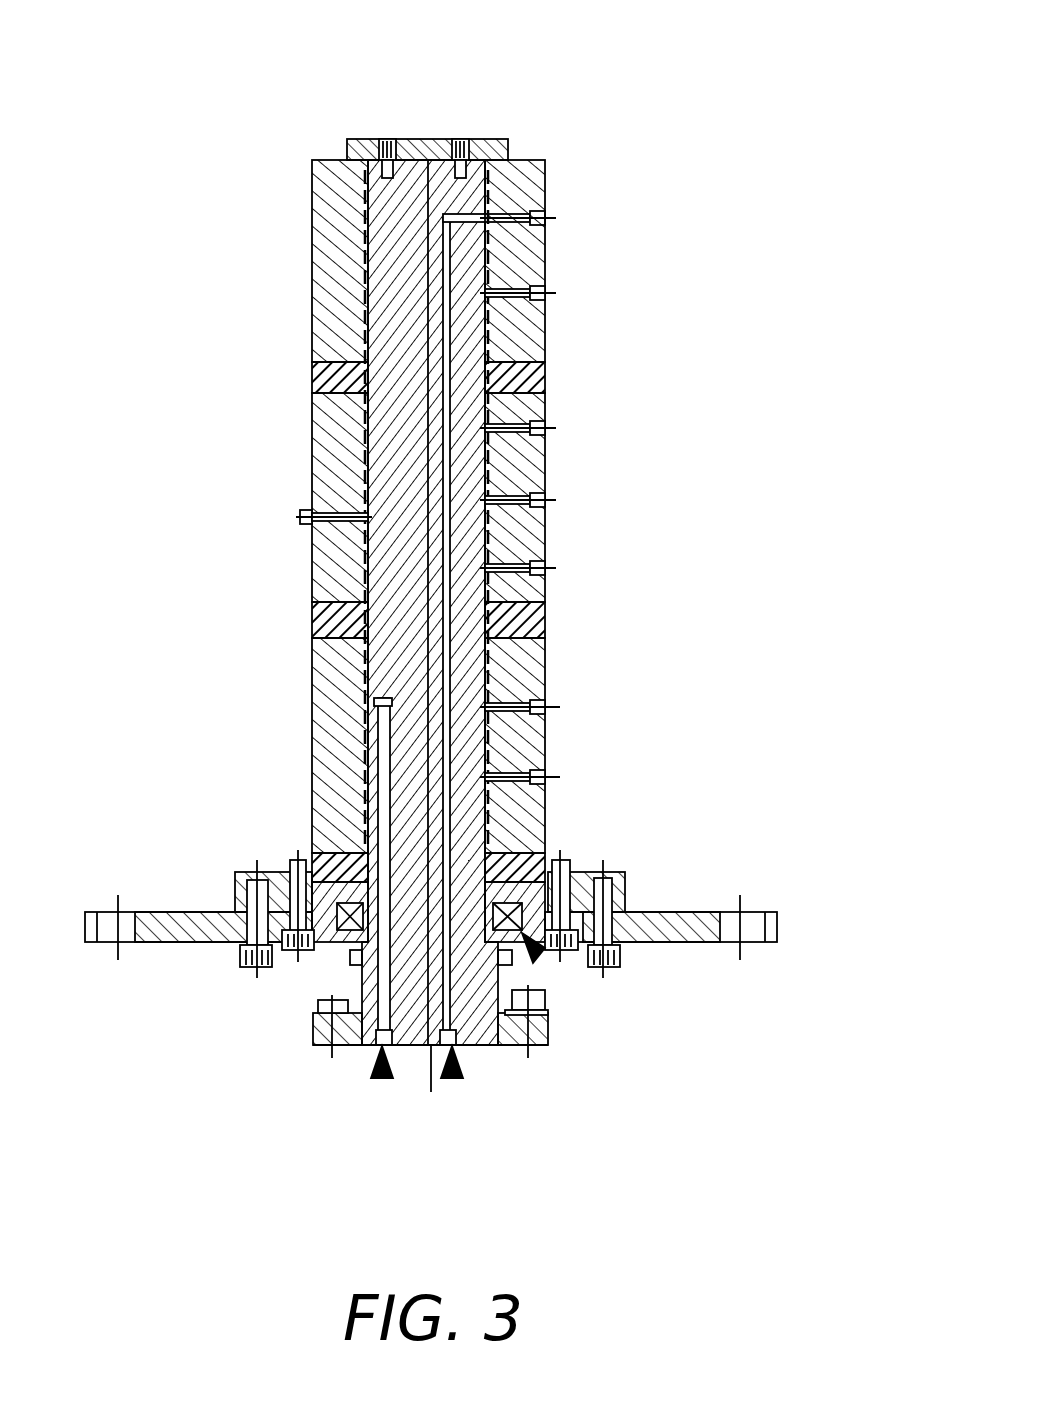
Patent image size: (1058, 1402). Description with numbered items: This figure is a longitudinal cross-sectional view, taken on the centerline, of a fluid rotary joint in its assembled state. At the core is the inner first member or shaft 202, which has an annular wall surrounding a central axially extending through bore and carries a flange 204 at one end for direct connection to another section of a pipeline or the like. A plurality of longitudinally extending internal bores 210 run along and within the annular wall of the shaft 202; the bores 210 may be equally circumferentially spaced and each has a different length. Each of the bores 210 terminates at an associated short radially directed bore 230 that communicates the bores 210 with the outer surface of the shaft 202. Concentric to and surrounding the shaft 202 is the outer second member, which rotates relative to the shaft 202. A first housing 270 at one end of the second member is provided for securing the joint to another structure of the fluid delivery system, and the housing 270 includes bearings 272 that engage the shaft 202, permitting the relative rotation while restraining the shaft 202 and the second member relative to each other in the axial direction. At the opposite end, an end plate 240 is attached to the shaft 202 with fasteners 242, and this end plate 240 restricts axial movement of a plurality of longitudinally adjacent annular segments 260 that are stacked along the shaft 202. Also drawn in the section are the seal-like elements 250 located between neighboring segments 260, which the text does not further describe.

The shaft 202 is at (362, 983).
The flange 204 is at (545, 1046).
The internal bores 210 is at (382, 1078).
The radially directed bore 230 is at (545, 190).
The end plate 240 is at (493, 139).
The fasteners 242 is at (460, 139).
The seals 250 is at (545, 382).
The annular segments 260 is at (310, 250).
The first housing 270 is at (823, 860).
The bearings 272 is at (540, 955).